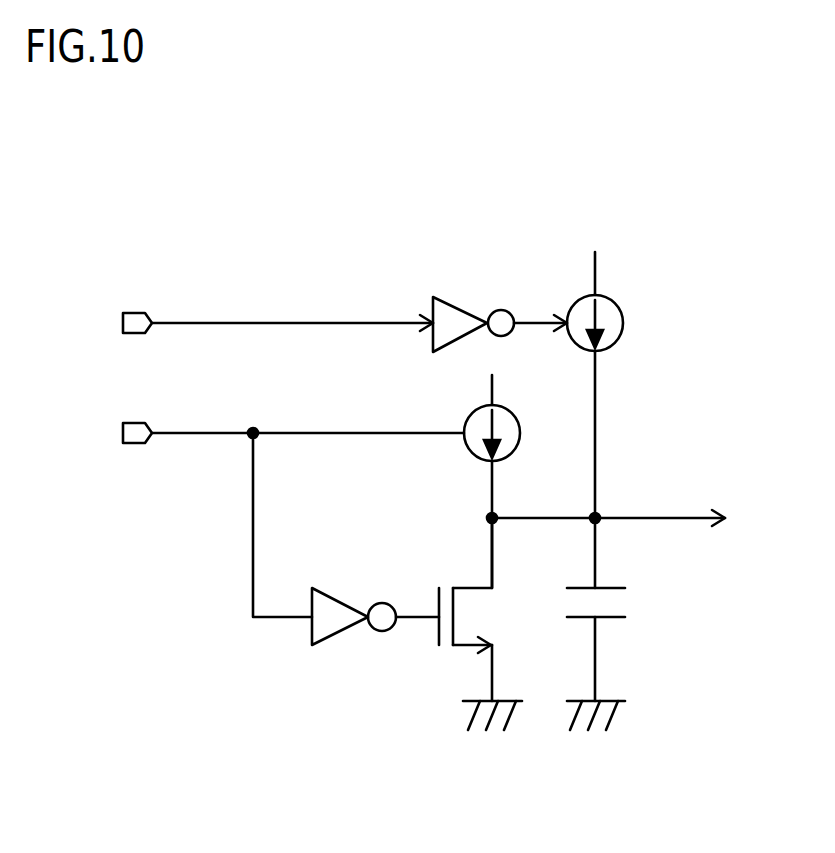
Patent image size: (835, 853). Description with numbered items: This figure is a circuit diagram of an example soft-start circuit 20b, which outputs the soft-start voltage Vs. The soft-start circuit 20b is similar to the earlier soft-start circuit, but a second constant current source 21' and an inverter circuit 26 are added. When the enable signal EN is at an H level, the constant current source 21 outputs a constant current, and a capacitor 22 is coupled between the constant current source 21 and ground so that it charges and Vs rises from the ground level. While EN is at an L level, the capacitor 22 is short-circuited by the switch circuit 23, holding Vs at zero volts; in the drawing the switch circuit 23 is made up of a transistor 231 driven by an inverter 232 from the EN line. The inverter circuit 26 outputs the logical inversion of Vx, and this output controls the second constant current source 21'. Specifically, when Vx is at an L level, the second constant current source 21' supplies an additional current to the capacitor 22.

The soft-start circuit 20b is at (652, 198).
The inverter circuit 26 is at (463, 310).
The second constant current source 21' is at (632, 323).
The constant current source 21 is at (525, 433).
The switch circuit 23 is at (378, 601).
The transistor 231 is at (468, 650).
The inverter 232 is at (310, 632).
The capacitor 22 is at (610, 618).